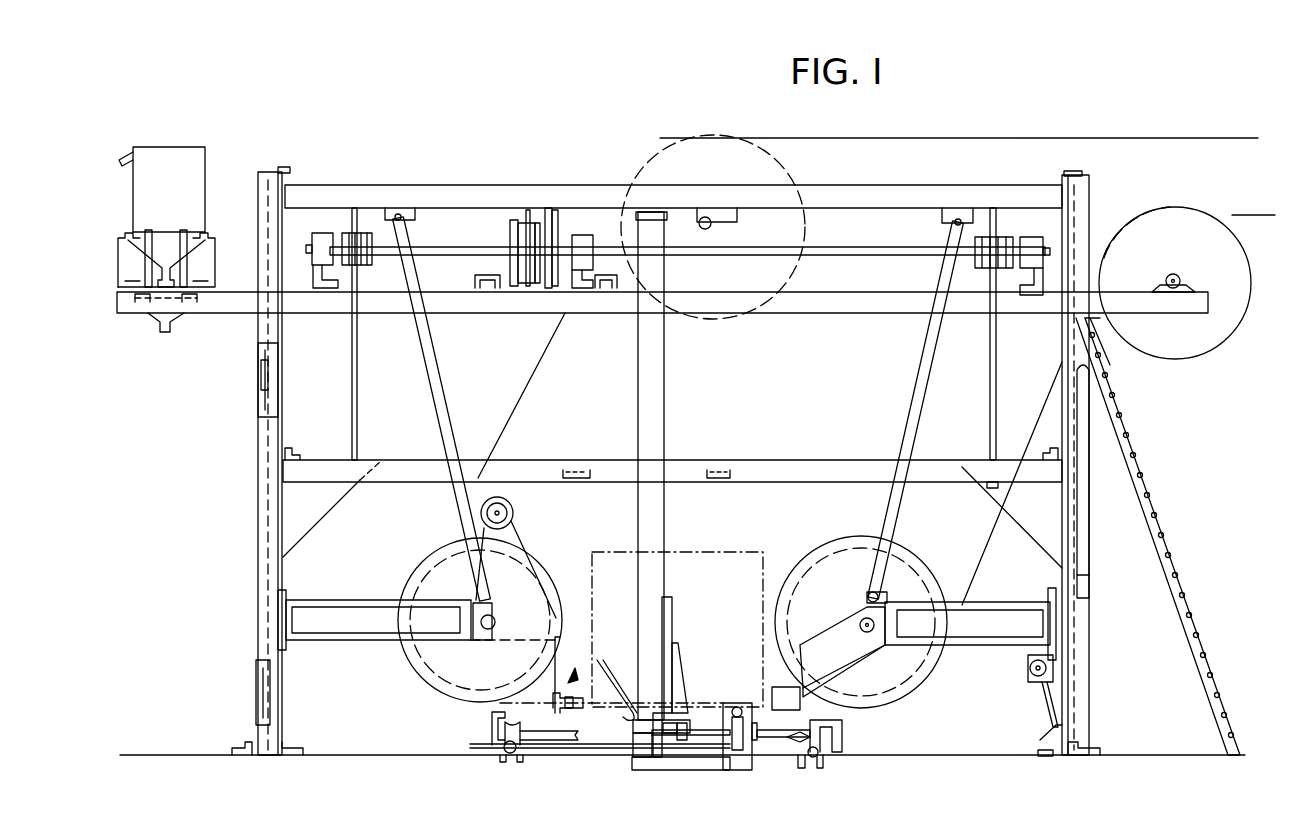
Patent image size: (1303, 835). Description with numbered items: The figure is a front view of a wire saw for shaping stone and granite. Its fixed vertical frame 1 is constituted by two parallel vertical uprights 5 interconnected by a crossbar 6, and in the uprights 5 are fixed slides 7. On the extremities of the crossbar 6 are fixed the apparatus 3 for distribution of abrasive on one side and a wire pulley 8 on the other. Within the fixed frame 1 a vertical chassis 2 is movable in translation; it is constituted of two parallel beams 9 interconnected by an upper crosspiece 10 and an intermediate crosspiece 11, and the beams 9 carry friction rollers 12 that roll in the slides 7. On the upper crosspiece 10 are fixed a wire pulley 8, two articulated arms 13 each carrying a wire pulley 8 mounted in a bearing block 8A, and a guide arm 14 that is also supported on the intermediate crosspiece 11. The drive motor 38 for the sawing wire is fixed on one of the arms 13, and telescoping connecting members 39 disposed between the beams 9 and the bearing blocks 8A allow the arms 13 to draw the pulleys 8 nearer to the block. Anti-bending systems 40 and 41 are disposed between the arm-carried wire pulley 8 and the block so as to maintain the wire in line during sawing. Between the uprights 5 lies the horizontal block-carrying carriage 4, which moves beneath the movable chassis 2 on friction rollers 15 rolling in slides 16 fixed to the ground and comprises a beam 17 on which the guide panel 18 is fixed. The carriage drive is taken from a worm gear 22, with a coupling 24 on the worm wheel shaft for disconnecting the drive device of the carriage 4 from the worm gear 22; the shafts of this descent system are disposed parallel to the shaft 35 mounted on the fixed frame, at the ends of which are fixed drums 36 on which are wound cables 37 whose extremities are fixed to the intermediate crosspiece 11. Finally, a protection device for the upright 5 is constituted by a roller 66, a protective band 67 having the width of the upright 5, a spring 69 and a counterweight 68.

The fixed vertical frame 1 is at (1078, 198).
The vertical chassis 2 is at (432, 190).
The apparatus for distribution of abrasive 3 is at (180, 160).
The block-carrying carriage 4 is at (845, 740).
The upright 5 is at (266, 752).
The crossbar 6 is at (830, 305).
The slide 7 is at (262, 352).
The wire pulley 8 is at (685, 170).
The bearing block 8A is at (470, 618).
The beam 9 is at (280, 500).
The upper crosspiece 10 is at (518, 198).
The intermediate crosspiece 11 is at (290, 468).
The friction roller 12 is at (262, 715).
The arm 13 is at (436, 380).
The guide arm 14 is at (652, 350).
The friction roller 15 is at (492, 740).
The slide 16 is at (510, 762).
The beam 17 is at (652, 735).
The guide panel 18 is at (668, 615).
The worm gear 22 is at (743, 745).
The coupling 24 is at (670, 738).
The shaft 35 is at (687, 233).
The drum 36 is at (370, 232).
The cable 37 is at (355, 378).
The drive motor 38 is at (514, 517).
The telescoping connecting member 39 is at (350, 636).
The anti-bending system 40 is at (572, 682).
The anti-bending system 41 is at (782, 685).
The roller 66 is at (1028, 678).
The protective band 67 is at (1050, 712).
The counterweight 68 is at (1090, 590).
The spring 69 is at (1027, 662).